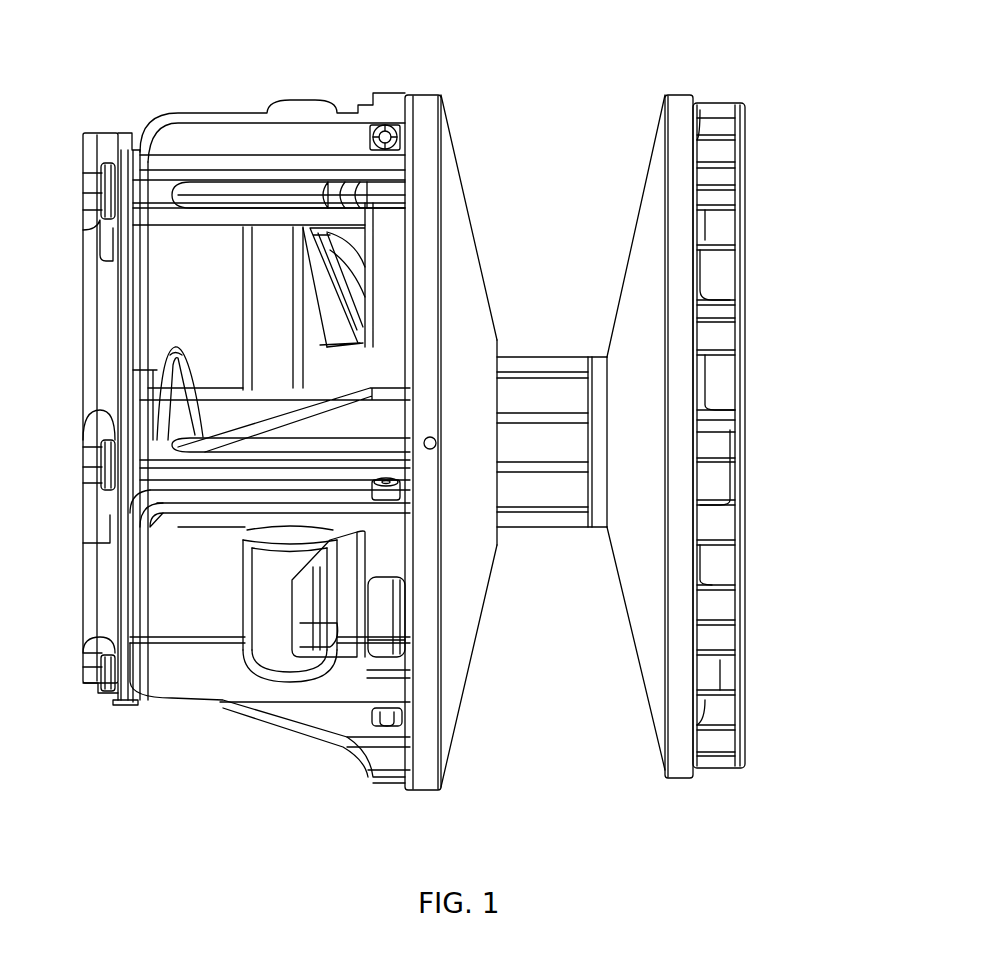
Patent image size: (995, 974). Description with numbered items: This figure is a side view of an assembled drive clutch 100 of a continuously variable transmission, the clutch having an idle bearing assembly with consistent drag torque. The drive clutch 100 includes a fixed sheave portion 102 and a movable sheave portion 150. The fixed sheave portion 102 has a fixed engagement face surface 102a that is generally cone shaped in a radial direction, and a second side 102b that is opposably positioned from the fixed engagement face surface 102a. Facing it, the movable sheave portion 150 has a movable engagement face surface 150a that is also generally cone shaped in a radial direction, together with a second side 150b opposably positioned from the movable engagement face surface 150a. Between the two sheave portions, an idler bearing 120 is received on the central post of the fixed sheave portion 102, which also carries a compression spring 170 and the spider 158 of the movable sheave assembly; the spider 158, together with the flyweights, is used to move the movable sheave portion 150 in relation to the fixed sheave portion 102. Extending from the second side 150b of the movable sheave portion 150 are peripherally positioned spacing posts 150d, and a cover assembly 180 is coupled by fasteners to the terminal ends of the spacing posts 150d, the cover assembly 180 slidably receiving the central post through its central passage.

The drive clutch 100 is at (683, 50).
The fixed sheave portion 102 is at (716, 782).
The fixed engagement face surface 102a is at (633, 615).
The second side 102b is at (738, 201).
The idler bearing 120 is at (547, 355).
The movable sheave portion 150 is at (272, 740).
The movable engagement face surface 150a is at (455, 681).
The second side 150b is at (390, 770).
The spacing posts 150d is at (225, 130).
The spider 158 is at (247, 590).
The compression spring 170 is at (172, 362).
The cover assembly 180 is at (92, 604).